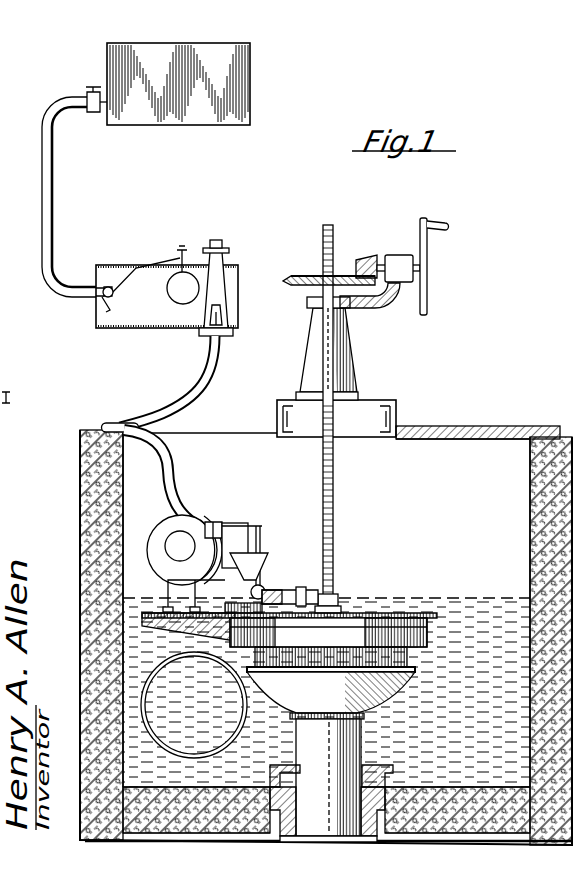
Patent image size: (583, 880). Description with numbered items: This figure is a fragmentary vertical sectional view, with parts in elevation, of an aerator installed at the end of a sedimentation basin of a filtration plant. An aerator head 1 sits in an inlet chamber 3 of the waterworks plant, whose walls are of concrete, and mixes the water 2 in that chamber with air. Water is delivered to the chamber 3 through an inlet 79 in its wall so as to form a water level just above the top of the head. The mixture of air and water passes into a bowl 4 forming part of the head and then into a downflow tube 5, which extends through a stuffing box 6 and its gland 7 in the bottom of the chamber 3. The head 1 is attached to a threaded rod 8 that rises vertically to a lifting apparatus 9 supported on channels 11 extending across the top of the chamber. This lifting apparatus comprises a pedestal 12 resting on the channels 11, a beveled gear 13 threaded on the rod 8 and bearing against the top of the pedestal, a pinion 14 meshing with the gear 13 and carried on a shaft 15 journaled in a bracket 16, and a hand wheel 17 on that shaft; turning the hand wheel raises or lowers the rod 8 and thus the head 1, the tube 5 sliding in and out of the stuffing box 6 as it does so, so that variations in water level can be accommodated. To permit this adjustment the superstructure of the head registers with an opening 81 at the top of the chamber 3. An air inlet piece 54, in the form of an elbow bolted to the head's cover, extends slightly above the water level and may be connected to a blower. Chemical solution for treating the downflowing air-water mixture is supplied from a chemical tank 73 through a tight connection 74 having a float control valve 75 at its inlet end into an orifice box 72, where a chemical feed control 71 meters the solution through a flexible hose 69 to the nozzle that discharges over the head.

The aerator head 1 is at (398, 606).
The water 2 is at (480, 613).
The inlet chamber 3 is at (437, 493).
The bowl 4 is at (372, 702).
The downflow tube 5 is at (352, 735).
The stuffing box 6 is at (398, 792).
The gland 7 is at (386, 770).
The threaded rod 8 is at (334, 503).
The lifting apparatus 9 is at (360, 341).
The channels 11 is at (277, 412).
The pedestal 12 is at (345, 362).
The beveled gear 13 is at (292, 276).
The pinion 14 is at (364, 258).
The shaft 15 is at (378, 262).
The bracket 16 is at (385, 300).
The hand wheel 17 is at (428, 262).
The air inlet piece 54 is at (278, 590).
The flexible hose 69 is at (176, 404).
The chemical feed control 71 is at (216, 278).
The orifice box 72 is at (142, 318).
The chemical tank 73 is at (160, 125).
The tight connection 74 is at (56, 208).
The float control valve 75 is at (111, 286).
The inlet 79 is at (184, 682).
The opening 81 is at (228, 432).